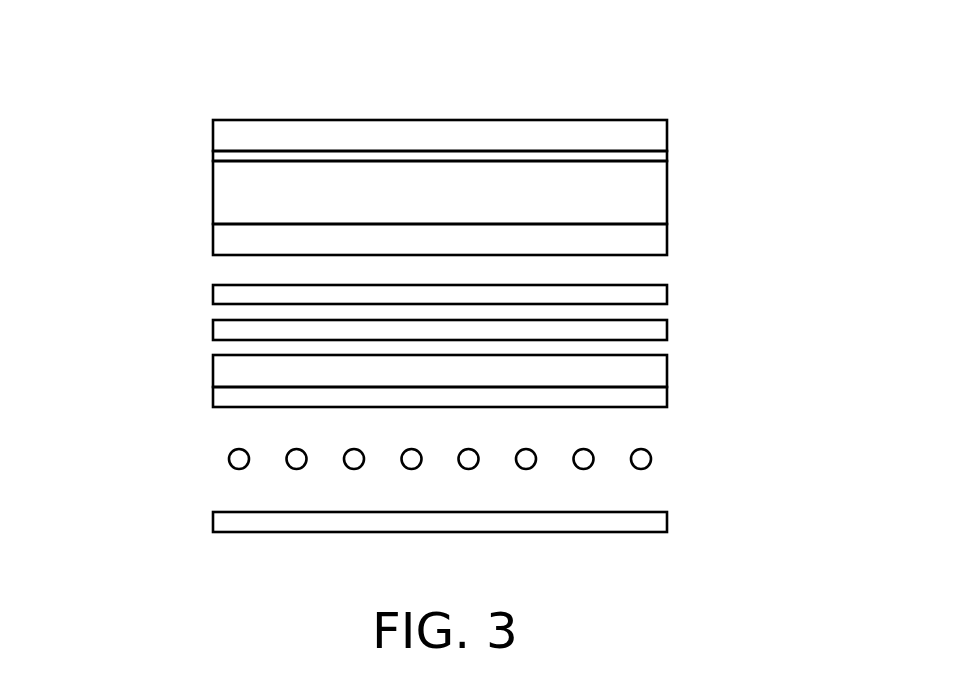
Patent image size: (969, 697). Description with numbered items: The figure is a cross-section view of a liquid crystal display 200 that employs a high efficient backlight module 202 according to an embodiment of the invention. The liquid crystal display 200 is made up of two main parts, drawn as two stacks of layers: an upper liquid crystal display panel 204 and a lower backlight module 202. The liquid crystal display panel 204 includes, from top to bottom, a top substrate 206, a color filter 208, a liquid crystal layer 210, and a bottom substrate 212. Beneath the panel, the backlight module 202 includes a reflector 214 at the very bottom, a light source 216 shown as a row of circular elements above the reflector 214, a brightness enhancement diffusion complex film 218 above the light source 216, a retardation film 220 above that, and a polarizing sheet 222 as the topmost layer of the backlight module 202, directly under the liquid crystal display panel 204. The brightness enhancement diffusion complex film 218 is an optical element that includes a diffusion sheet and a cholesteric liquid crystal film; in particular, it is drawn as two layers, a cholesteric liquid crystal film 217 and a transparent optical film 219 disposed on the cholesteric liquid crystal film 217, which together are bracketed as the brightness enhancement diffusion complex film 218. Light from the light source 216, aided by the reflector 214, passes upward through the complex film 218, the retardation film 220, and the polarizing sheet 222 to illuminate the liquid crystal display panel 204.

The liquid crystal display 200 is at (89, 42).
The backlight module 202 is at (190, 285).
The liquid crystal display panel 204 is at (190, 120).
The top substrate 206 is at (667, 125).
The color filter 208 is at (667, 156).
The liquid crystal layer 210 is at (667, 190).
The bottom substrate 212 is at (667, 236).
The reflector 214 is at (667, 519).
The light source 216 is at (651, 458).
The cholesteric liquid crystal film 217 is at (667, 367).
The brightness enhancement diffusion complex film 218 is at (531, 385).
The transparent optical film 219 is at (667, 395).
The retardation film 220 is at (667, 328).
The polarizing sheet 222 is at (667, 290).